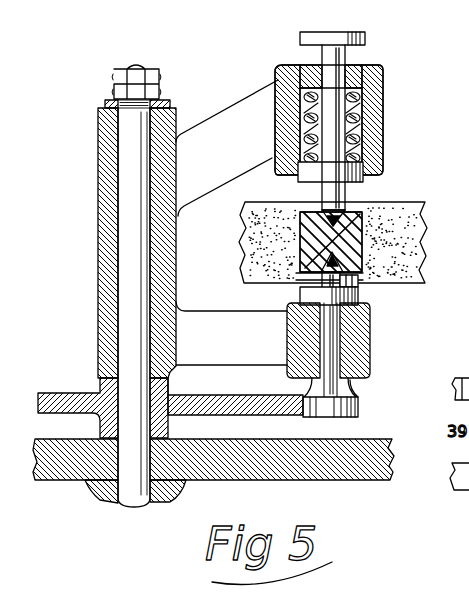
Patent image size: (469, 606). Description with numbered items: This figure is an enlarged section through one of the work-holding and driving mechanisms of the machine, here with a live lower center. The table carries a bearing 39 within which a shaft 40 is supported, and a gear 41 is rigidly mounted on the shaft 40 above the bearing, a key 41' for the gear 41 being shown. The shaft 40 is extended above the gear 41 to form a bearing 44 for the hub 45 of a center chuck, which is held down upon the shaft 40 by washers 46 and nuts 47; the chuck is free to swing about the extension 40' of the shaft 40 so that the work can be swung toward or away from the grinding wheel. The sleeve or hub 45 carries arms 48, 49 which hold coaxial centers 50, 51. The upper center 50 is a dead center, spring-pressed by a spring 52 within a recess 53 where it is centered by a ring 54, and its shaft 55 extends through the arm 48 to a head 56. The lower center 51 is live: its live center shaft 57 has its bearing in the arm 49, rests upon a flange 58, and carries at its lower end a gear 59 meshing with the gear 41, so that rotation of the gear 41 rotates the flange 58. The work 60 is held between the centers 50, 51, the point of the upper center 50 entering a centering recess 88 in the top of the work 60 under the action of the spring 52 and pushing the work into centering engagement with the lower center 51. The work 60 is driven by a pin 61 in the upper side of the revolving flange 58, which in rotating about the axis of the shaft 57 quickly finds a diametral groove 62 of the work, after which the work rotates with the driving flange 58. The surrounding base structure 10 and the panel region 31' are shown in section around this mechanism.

The base 10 is at (245, 448).
The panel 31' is at (348, 242).
The bearing 39 is at (100, 492).
The shaft 40 is at (134, 322).
The extension of shaft 40' is at (104, 301).
The gear 41 is at (170, 406).
The key 41' is at (190, 371).
The bearing 44 is at (140, 401).
The hub 45 is at (163, 250).
The washer 46 is at (168, 103).
The nut 47 is at (160, 79).
The arm 48 is at (227, 148).
The arm 49 is at (231, 333).
The upper center 50 is at (337, 225).
The lower center 51 is at (355, 235).
The spring 52 is at (358, 86).
The recess 53 is at (362, 115).
The ring 54 is at (308, 172).
The shaft 55 is at (338, 90).
The head 56 is at (303, 43).
The live center shaft 57 is at (330, 333).
The flange 58 is at (359, 297).
The gear 59 is at (359, 408).
The work 60 is at (314, 252).
The pin 61 is at (358, 284).
The groove 62 is at (311, 275).
The centering recess 88 is at (335, 212).